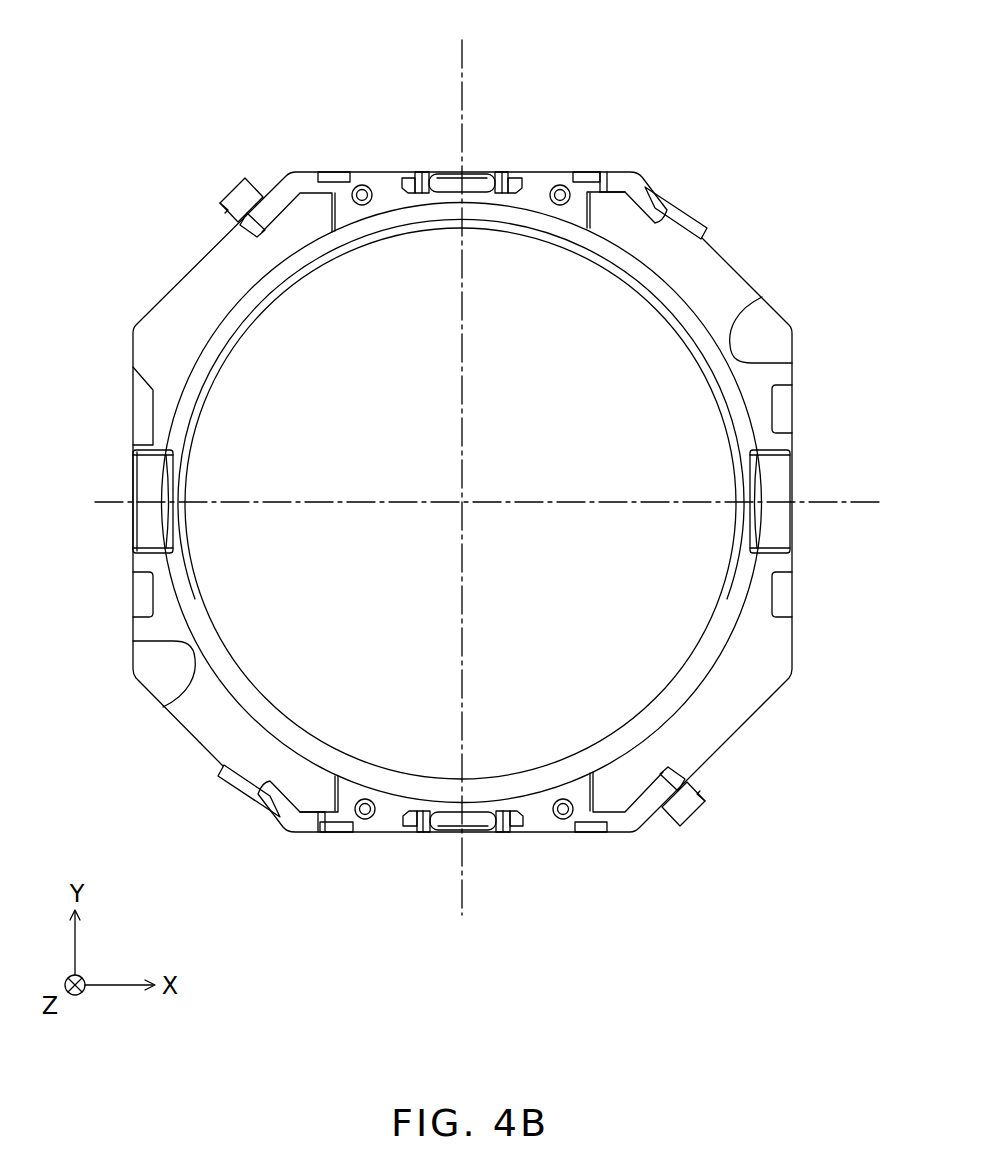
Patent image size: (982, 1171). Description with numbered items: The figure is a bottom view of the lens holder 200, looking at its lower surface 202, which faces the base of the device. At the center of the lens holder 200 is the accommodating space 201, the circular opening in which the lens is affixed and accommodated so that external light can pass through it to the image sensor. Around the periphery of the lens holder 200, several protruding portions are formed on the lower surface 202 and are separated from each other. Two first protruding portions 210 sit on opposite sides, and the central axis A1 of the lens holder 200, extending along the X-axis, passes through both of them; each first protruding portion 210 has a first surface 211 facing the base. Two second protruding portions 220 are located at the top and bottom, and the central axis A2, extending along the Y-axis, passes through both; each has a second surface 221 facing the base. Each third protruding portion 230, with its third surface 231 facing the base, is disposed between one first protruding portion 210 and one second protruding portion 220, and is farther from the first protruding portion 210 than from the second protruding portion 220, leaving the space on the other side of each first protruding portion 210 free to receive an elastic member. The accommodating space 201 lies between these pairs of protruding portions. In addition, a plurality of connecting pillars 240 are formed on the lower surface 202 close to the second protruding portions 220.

The lens holder 200 is at (42, 26).
The accommodating space 201 is at (265, 422).
The lower surface 202 is at (213, 287).
The first protruding portion 210 is at (791, 469).
The first surface 211 is at (772, 528).
The second protruding portion 220 is at (433, 173).
The second surface 221 is at (482, 180).
The third protruding portion 230 is at (646, 189).
The third surface 231 is at (652, 208).
The connecting pillar 240 is at (360, 185).
The central axis A1 is at (543, 500).
The central axis A2 is at (468, 63).